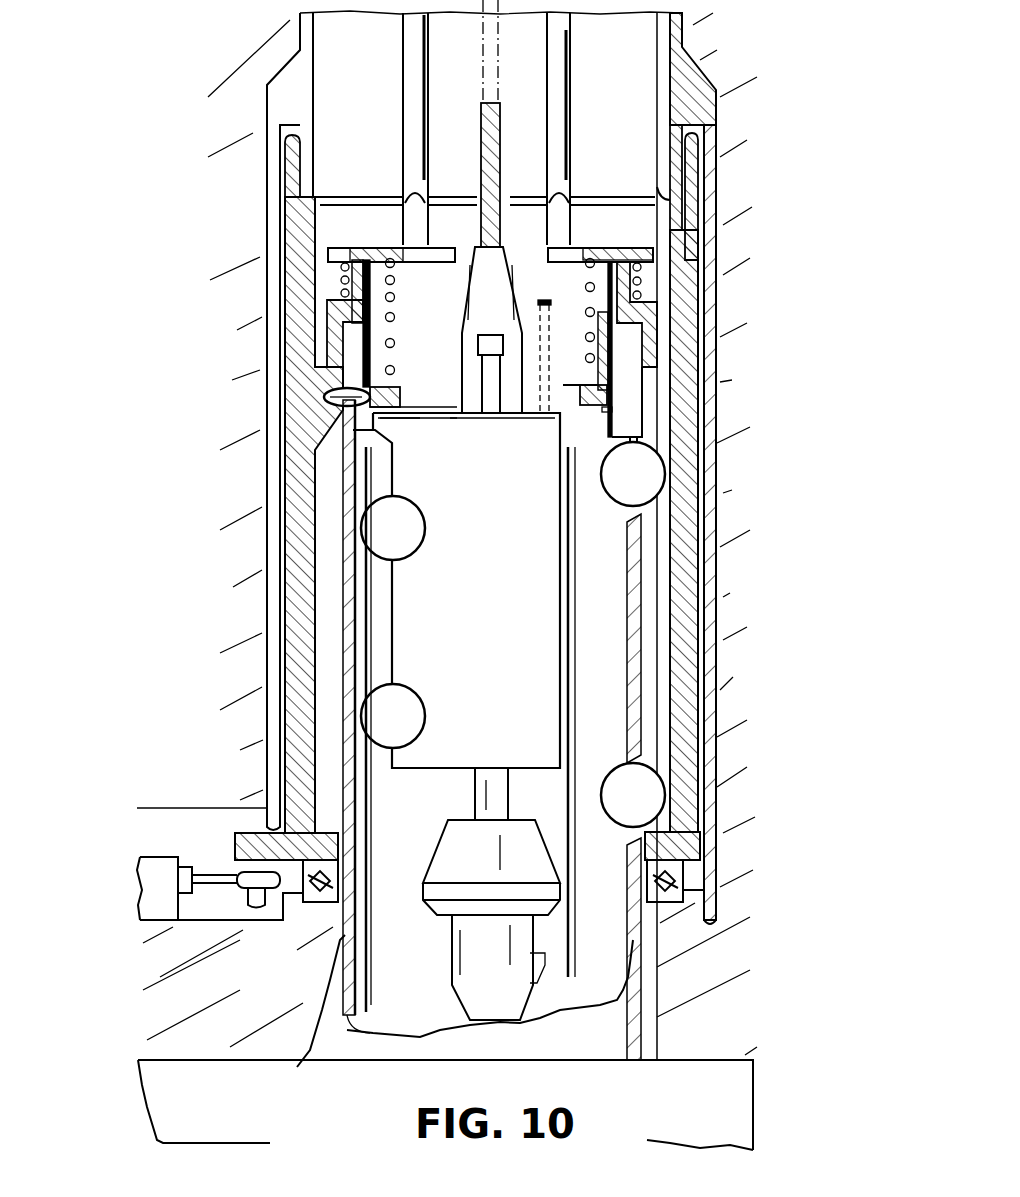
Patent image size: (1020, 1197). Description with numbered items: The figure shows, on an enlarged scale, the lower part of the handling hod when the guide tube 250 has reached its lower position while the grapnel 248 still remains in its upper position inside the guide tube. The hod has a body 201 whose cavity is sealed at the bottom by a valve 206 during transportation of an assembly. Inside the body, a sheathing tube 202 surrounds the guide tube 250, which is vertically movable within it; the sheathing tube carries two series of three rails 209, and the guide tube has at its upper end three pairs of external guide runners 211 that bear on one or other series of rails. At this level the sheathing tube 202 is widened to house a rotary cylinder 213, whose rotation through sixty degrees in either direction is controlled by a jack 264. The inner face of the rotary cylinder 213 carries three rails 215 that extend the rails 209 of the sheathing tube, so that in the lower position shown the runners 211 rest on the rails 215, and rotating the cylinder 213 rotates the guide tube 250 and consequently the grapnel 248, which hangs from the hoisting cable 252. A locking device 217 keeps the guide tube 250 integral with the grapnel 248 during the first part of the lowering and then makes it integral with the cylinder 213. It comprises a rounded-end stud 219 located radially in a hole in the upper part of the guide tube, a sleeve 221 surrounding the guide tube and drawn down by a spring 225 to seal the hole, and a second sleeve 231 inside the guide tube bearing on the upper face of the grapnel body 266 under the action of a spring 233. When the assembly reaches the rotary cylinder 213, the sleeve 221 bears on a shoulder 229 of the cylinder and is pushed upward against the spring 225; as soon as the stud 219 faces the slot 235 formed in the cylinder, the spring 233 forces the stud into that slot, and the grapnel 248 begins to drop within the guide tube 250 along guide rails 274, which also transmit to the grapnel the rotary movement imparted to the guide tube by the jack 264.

The body 201 is at (790, 59).
The sheathing tube 202 is at (300, 27).
The valve 206 is at (705, 1100).
The rails 209 is at (410, 100).
The external guide runners 211 is at (665, 477).
The rotary cylinder 213 is at (300, 558).
The rails 215 is at (663, 637).
The locking device 217 is at (250, 426).
The stud 219 is at (330, 407).
The sleeve 221 is at (327, 300).
The spring 225 is at (343, 267).
The shoulder 229 is at (330, 355).
The second sleeve 231 is at (607, 397).
The spring 233 is at (600, 345).
The slot 235 is at (547, 300).
The grapnel 248 is at (597, 680).
The guide tube 250 is at (313, 1045).
The cable 252 is at (480, 87).
The jack 264 is at (168, 867).
The grapnel body 266 is at (490, 610).
The guide rails 274 is at (350, 935).